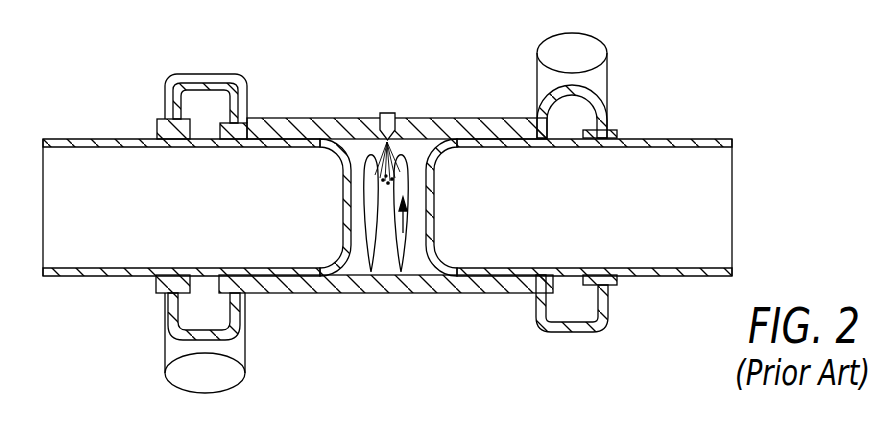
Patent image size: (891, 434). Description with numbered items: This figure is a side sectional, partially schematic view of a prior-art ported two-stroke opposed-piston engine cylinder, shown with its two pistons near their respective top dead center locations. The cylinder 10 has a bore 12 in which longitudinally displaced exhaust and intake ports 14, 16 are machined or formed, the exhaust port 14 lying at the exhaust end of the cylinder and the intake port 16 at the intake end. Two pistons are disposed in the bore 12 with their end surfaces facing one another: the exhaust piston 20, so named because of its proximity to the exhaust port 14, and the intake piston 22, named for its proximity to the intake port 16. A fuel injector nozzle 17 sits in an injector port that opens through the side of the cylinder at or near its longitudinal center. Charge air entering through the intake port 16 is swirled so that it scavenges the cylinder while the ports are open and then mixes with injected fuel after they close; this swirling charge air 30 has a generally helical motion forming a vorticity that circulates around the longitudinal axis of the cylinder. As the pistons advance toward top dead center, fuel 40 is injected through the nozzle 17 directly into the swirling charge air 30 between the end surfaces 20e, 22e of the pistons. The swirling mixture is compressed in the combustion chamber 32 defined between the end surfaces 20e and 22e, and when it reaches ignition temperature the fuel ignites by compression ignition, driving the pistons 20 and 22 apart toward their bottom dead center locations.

The cylinder 10 is at (327, 293).
The bore 12 is at (372, 272).
The exhaust port 14 is at (207, 275).
The intake port 16 is at (572, 277).
The fuel injector nozzle 17 is at (388, 112).
The exhaust piston 20 is at (208, 178).
The end surface of exhaust piston 20e is at (353, 190).
The intake piston 22 is at (580, 217).
The end surface of intake piston 22e is at (420, 245).
The swirling charge air 30 is at (403, 160).
The combustion chamber 32 is at (362, 267).
The fuel 40 is at (400, 177).